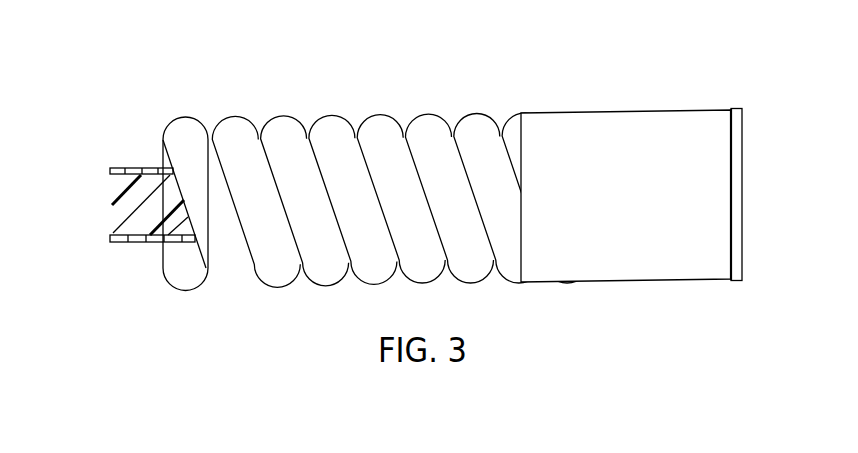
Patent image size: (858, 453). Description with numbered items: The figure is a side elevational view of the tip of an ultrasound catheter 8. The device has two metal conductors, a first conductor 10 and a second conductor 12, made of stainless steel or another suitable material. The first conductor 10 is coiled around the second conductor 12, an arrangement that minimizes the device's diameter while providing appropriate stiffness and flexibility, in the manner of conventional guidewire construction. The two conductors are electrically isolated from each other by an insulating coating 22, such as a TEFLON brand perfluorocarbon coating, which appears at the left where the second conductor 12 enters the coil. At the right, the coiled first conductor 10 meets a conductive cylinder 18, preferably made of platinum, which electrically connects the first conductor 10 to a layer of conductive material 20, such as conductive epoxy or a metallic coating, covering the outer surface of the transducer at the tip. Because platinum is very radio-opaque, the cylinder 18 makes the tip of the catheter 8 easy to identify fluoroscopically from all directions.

The ultrasound catheter 8 is at (698, 56).
The first conductor 10 is at (283, 150).
The second conductor 12 is at (150, 212).
The conductive cylinder 18 is at (633, 232).
The layer of conductive material 20 is at (738, 156).
The insulating coating 22 is at (142, 168).